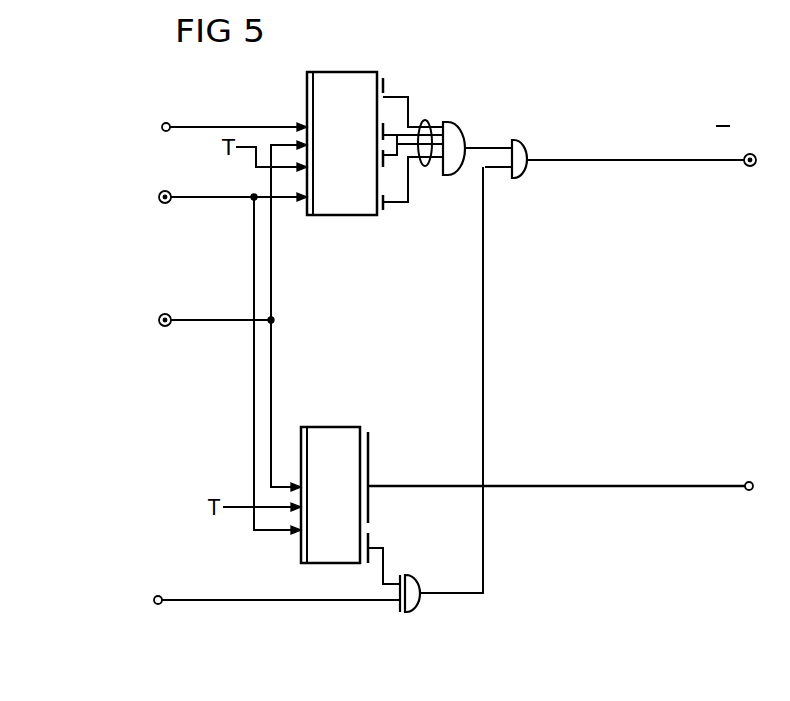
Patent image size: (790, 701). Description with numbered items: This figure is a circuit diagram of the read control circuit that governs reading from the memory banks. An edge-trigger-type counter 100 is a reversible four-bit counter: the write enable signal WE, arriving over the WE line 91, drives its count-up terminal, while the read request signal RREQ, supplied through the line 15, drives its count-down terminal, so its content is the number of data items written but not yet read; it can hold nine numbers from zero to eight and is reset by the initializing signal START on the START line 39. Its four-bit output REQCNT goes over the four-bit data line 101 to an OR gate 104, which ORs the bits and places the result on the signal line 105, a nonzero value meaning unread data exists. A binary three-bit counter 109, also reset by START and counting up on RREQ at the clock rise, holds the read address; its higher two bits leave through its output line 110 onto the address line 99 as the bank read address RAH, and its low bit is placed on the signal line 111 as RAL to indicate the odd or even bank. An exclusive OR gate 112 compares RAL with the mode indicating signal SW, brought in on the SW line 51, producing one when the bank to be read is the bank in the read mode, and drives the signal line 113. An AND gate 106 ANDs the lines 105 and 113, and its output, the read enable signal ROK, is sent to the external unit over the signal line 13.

The signal line 13 is at (646, 158).
The line 15 is at (205, 323).
The START line 39 is at (206, 200).
The SW switch line 51 is at (282, 602).
The WE write enable line 91 is at (276, 126).
The signal line 99 is at (599, 489).
The edge-trigger-type counter 100 is at (362, 72).
The 4-bit data line 101 is at (428, 121).
The OR gate 104 is at (458, 128).
The signal line 105 is at (488, 147).
The AND gate 106 is at (524, 172).
The binary 3-bit counter 109 is at (330, 427).
The counter output line 110 is at (410, 485).
The signal line 111 is at (385, 558).
The exclusive OR gate 112 is at (420, 610).
The signal line 113 is at (483, 568).